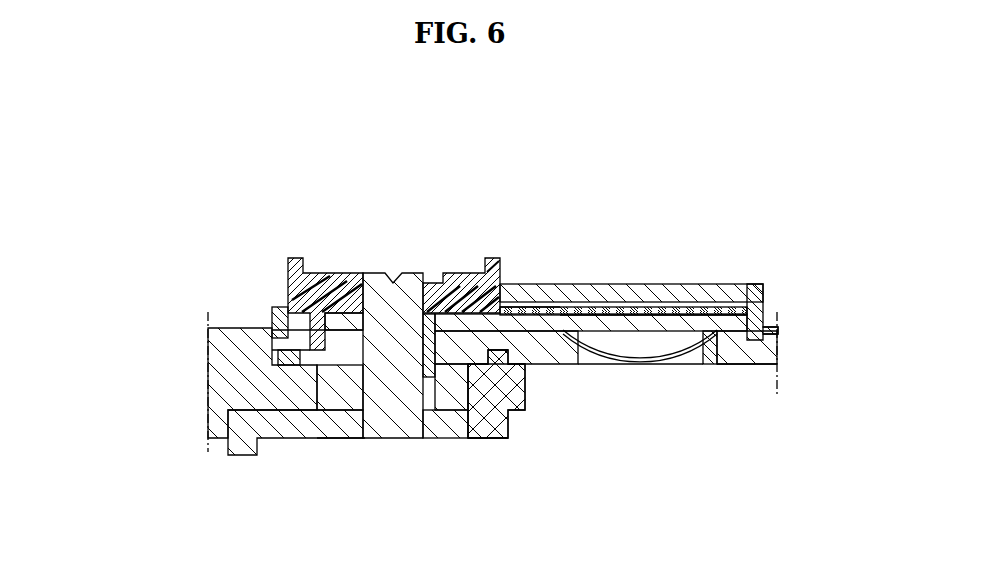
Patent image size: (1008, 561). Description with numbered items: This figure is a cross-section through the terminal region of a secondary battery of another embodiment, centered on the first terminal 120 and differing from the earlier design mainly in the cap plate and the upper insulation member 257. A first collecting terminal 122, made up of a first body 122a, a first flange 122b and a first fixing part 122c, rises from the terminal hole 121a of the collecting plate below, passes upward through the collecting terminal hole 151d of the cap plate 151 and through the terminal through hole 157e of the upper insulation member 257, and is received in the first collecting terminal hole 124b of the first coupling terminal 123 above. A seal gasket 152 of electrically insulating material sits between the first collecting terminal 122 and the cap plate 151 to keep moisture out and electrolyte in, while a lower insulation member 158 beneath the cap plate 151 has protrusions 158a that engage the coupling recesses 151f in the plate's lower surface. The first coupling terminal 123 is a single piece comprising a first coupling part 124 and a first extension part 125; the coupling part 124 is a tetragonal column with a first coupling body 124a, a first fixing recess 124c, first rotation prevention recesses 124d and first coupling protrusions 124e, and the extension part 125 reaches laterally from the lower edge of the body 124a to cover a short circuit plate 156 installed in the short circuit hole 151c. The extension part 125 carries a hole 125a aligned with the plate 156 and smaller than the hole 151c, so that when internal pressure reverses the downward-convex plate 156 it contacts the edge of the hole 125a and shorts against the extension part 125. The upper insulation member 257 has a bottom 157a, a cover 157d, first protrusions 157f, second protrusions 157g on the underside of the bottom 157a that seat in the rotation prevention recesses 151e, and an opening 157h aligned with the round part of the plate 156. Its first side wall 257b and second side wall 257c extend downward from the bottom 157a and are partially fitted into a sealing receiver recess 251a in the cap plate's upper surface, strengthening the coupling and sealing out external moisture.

The first terminal 120 is at (251, 177).
The terminal hole 121a is at (363, 440).
The first collecting terminal 122 is at (205, 315).
The first body 122a is at (310, 352).
The first flange 122b is at (330, 387).
The first fixing part 122c is at (363, 283).
The first coupling terminal 123 is at (530, 217).
The first coupling part 124 is at (429, 236).
The first coupling body 124a is at (447, 283).
The first collecting terminal hole 124b is at (360, 322).
The first fixing recess 124c is at (392, 282).
The first rotation prevention recesses 124d is at (476, 285).
The first coupling protrusions 124e is at (524, 229).
The first extension part 125 is at (608, 290).
The hole 125a is at (629, 302).
The cap plate 151 is at (639, 358).
The short circuit hole 151c is at (710, 355).
The collecting terminal hole 151d is at (436, 396).
The rotation prevention recesses 151e is at (505, 312).
The coupling recesses 151f is at (509, 362).
The seal gasket 152 is at (491, 434).
The short circuit plate 156 is at (672, 358).
The bottom 157a is at (765, 368).
The cover 157d is at (684, 308).
The terminal through hole 157e is at (401, 392).
The first protrusions 157f is at (287, 275).
The second protrusions 157g is at (272, 330).
The opening 157h is at (708, 318).
The lower insulation member 158 is at (516, 405).
The protrusions 158a is at (527, 395).
The sealing receiver recess 251a is at (272, 322).
The upper insulation member 257 is at (801, 278).
The first side wall 257b is at (767, 310).
The second side wall 257c is at (272, 312).